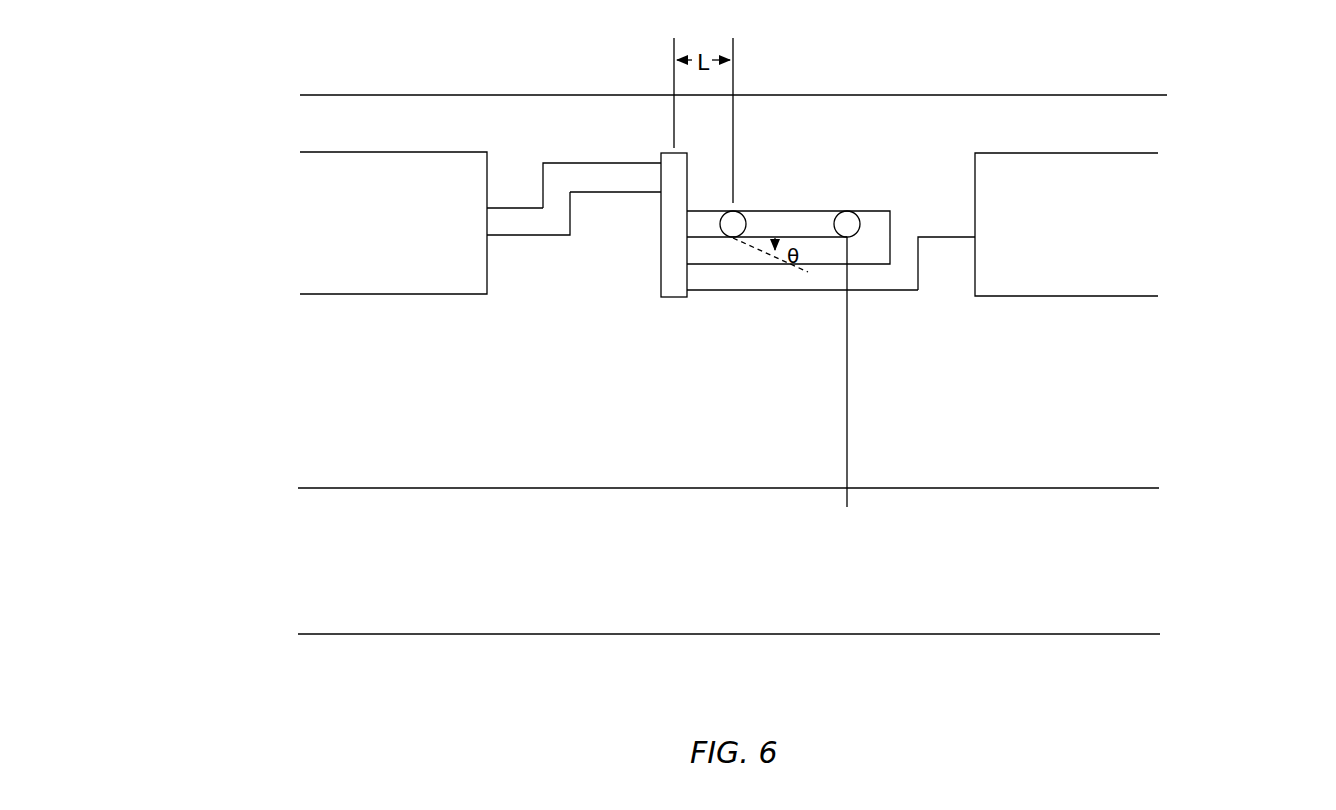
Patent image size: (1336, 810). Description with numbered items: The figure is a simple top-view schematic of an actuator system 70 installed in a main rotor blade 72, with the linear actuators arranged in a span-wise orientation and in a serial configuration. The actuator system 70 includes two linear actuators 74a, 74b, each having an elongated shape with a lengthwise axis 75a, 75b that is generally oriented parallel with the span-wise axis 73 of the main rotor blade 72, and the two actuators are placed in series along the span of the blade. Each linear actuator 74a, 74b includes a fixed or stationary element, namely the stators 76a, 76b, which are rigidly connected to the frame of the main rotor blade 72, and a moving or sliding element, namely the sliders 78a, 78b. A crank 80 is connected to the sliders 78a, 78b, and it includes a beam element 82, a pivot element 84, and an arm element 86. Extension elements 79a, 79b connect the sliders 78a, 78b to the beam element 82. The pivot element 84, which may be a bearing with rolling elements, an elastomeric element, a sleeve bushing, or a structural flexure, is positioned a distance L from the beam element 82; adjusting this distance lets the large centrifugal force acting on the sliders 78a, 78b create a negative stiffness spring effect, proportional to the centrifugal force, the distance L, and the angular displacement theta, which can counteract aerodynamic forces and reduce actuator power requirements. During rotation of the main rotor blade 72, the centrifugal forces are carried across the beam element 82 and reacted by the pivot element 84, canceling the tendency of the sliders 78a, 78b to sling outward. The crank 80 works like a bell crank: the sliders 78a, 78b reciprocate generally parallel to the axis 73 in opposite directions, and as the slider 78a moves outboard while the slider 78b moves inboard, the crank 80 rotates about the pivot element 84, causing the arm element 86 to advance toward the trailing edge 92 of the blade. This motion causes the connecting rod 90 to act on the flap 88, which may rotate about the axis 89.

The actuator system 70 is at (664, 367).
The main rotor blade 72 is at (1088, 108).
The span-wise axis 73 is at (1158, 316).
The linear actuator 74a is at (457, 312).
The linear actuator 74b is at (1010, 317).
The lengthwise axis 75a is at (267, 223).
The lengthwise axis 75b is at (1158, 224).
The stator 76a is at (375, 177).
The stator 76b is at (1112, 178).
The slider 78a is at (527, 227).
The slider 78b is at (932, 223).
The extension element 79a is at (600, 178).
The extension element 79b is at (740, 280).
The crank 80 is at (739, 162).
The beam element 82 is at (667, 253).
The pivot element 84 is at (733, 210).
The arm element 86 is at (788, 226).
The flap 88 is at (453, 612).
The axis 89 is at (1158, 508).
The connecting rod 90 is at (847, 367).
The trailing edge 92 is at (799, 635).